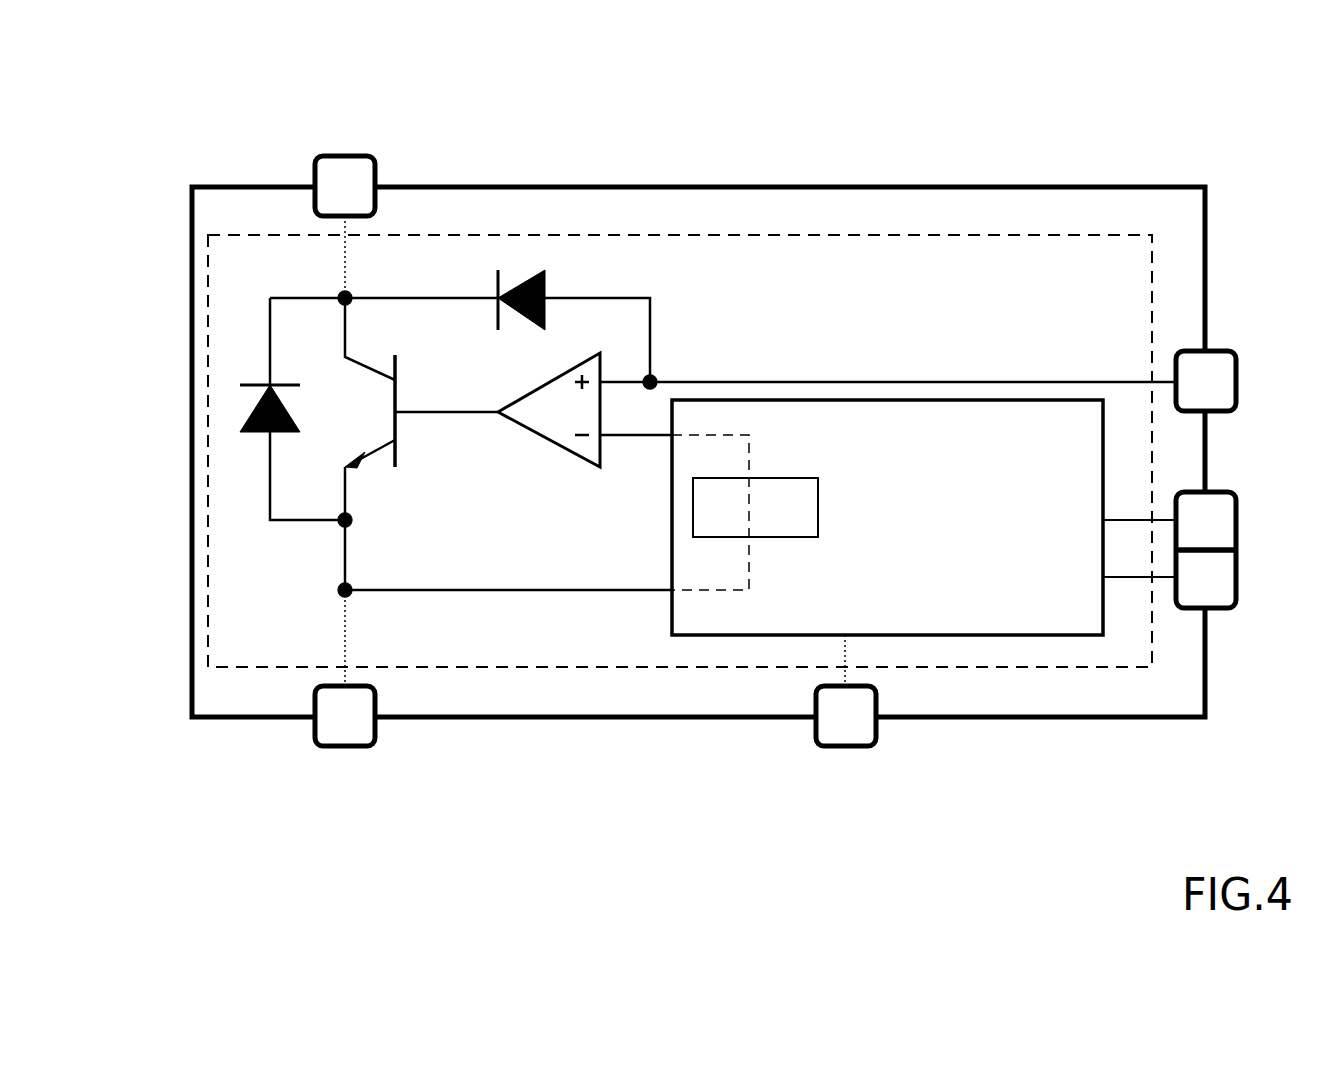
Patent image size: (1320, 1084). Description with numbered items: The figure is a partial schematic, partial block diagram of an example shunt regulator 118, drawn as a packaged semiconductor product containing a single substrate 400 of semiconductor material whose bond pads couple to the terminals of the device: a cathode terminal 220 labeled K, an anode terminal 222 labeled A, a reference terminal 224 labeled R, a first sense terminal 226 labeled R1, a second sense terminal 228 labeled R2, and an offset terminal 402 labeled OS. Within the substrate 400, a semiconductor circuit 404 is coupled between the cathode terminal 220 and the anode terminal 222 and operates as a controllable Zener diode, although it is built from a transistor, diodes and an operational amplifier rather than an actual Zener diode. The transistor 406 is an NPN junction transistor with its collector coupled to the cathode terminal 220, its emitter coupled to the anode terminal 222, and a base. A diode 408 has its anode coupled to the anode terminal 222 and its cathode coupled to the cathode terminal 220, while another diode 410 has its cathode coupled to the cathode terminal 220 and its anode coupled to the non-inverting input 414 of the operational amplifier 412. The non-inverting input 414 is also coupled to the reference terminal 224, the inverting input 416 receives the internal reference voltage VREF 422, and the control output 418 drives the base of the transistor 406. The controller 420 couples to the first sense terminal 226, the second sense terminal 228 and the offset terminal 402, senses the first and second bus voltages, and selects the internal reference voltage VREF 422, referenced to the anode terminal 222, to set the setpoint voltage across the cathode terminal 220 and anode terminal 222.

The shunt regulator 118 is at (147, 160).
The substrate 400 is at (208, 283).
The semiconductor circuit 404 is at (235, 555).
The transistor 406 is at (413, 452).
The diode 408 is at (237, 418).
The diode 410 is at (510, 272).
The operational amplifier 412 is at (548, 420).
The non-inverting input 414 is at (600, 378).
The inverting input 416 is at (603, 440).
The control output 418 is at (485, 410).
The controller 420 is at (924, 517).
The internal reference voltage VREF 422 is at (697, 522).
The cathode terminal 220 is at (355, 178).
The anode terminal 222 is at (352, 727).
The reference terminal 224 is at (1205, 367).
The first sense terminal 226 is at (1215, 515).
The second sense terminal 228 is at (1213, 590).
The offset terminal 402 is at (873, 745).